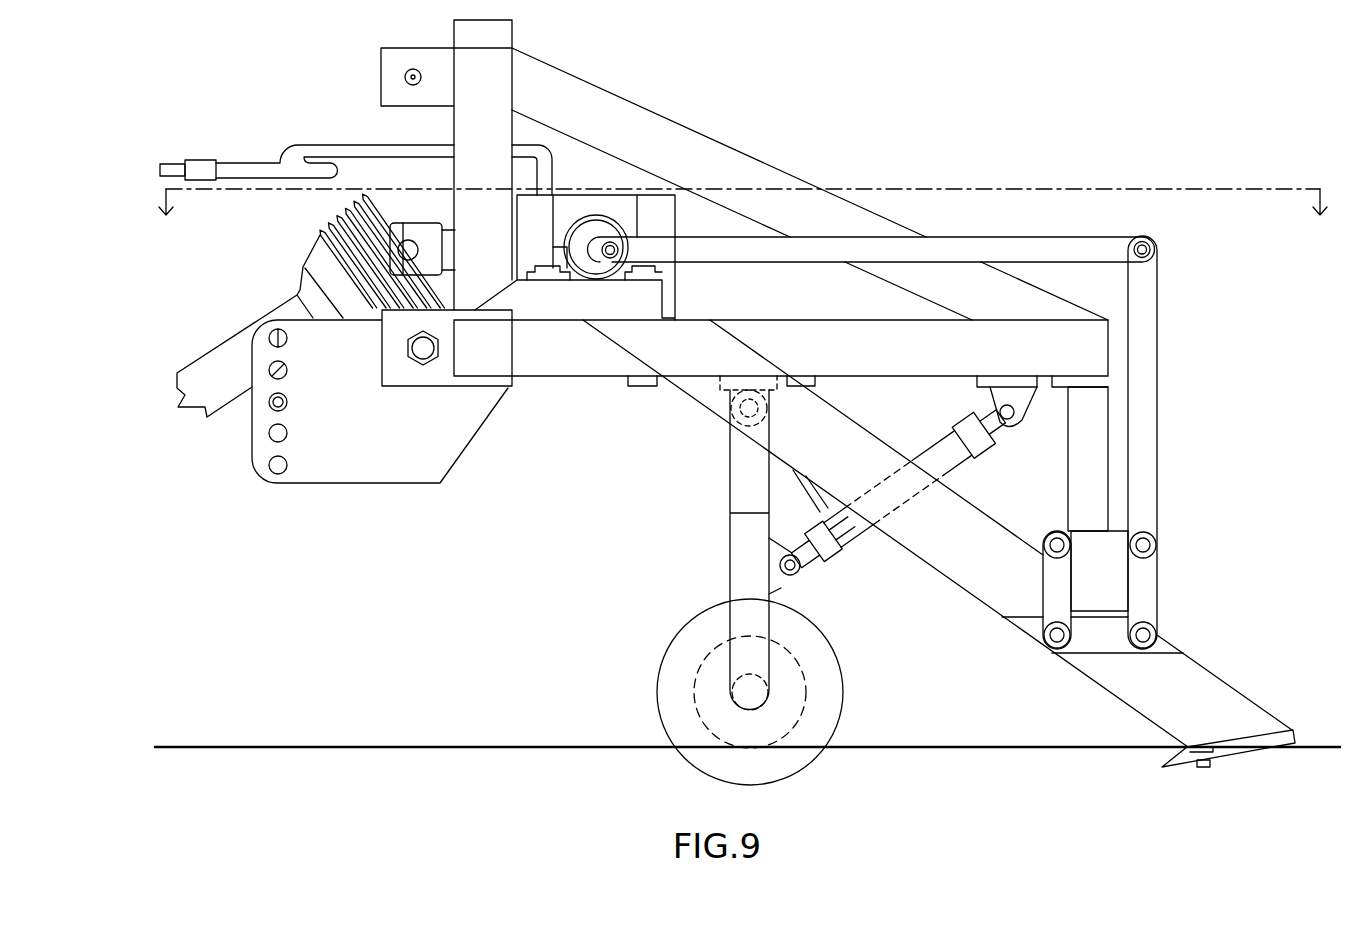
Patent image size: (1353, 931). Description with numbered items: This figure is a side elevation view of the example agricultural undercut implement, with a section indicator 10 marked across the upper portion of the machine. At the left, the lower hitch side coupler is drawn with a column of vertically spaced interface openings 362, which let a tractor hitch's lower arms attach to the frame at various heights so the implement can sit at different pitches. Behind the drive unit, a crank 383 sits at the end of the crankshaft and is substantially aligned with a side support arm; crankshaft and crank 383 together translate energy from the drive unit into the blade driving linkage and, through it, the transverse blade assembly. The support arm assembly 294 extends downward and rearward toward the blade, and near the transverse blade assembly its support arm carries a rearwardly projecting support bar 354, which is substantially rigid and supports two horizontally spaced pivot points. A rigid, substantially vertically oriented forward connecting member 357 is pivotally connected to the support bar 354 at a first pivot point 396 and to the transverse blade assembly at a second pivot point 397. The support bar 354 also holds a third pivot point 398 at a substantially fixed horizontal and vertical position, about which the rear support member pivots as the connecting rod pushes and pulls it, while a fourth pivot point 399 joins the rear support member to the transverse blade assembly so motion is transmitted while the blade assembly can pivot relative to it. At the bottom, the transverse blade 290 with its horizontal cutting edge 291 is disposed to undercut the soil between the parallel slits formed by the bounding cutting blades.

The section line 10 is at (743, 219).
The transverse blade 290 is at (1250, 753).
The horizontal cutting edge 291 is at (1176, 769).
The support arm assembly 294 is at (708, 432).
The support bar 354 is at (1107, 573).
The forward connecting member 357 is at (1048, 580).
The interface opening 362 is at (311, 465).
The crank 383 is at (594, 252).
The first pivot point 396 is at (1046, 534).
The second pivot point 397 is at (1047, 649).
The third pivot point 398 is at (1160, 544).
The fourth pivot point 399 is at (1160, 634).